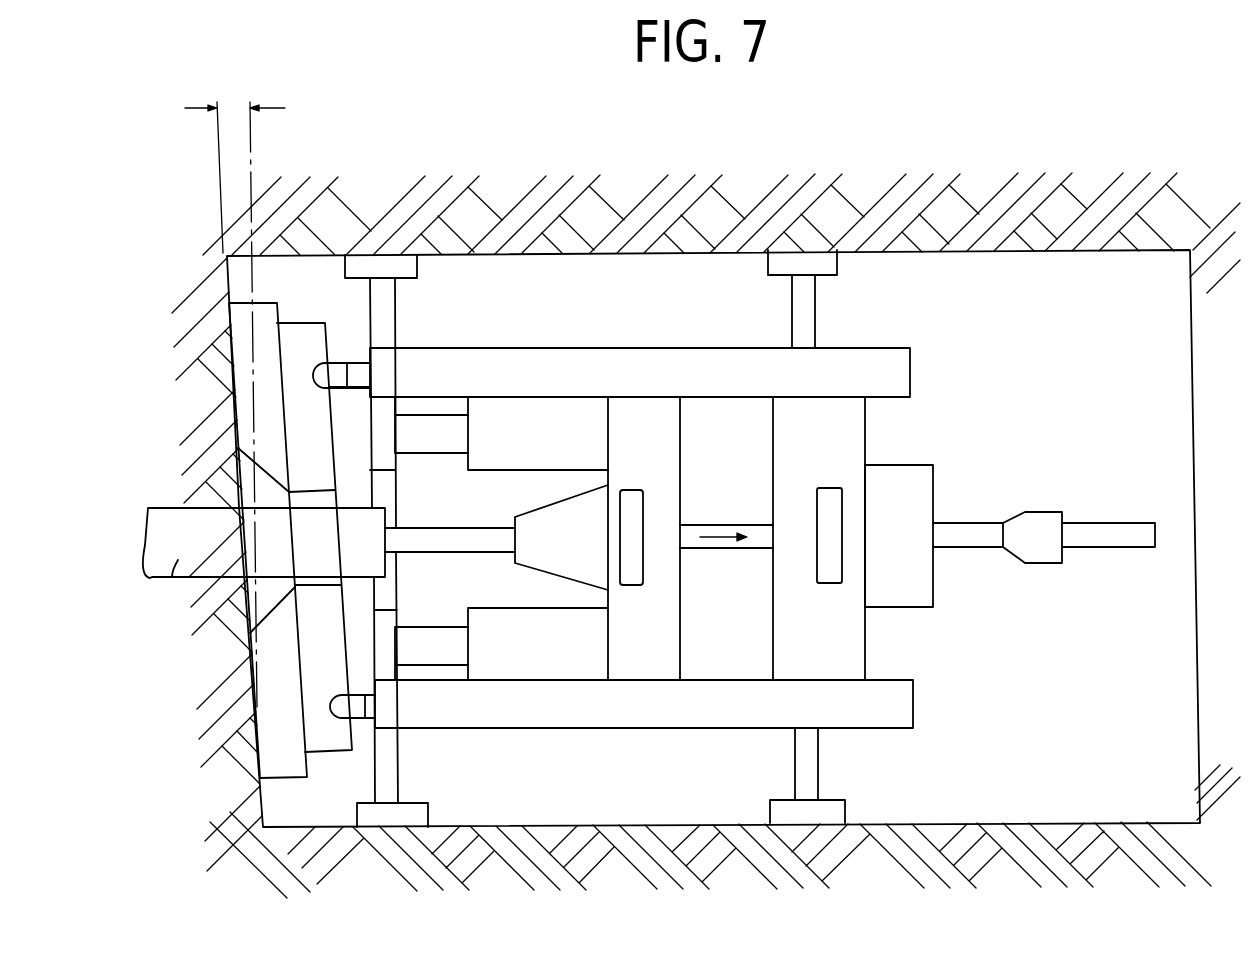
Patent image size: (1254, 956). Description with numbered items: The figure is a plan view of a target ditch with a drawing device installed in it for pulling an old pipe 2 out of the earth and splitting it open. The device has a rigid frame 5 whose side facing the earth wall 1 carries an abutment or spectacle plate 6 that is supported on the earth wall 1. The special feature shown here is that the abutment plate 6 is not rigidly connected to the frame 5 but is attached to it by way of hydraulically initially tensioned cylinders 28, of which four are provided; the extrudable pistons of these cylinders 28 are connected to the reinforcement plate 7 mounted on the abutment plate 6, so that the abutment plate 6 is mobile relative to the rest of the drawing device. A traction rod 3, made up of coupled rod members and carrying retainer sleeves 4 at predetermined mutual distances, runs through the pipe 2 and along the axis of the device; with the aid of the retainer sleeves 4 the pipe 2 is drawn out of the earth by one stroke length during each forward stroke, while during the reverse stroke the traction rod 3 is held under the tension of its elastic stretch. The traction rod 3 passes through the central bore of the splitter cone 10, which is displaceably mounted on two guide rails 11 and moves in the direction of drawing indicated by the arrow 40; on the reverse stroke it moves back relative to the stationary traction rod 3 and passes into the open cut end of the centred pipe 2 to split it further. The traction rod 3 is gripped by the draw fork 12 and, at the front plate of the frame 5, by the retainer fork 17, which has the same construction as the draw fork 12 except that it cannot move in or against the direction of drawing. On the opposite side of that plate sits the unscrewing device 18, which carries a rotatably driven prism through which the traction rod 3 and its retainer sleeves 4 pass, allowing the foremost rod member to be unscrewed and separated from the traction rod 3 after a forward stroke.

The earth wall 1 is at (205, 298).
The pipe 2 is at (172, 578).
The traction rod 3 is at (1117, 533).
The retainer sleeves 4 is at (1043, 527).
The rigid frame 5 is at (703, 370).
The abutment plate 6 is at (270, 727).
The reinforcement plate 7 is at (310, 658).
The splitter cone 10 is at (558, 557).
The guide rails 11 is at (443, 427).
The draw fork 12 is at (637, 572).
The retainer fork 17 is at (832, 513).
The unscrewing device 18 is at (913, 585).
The hydraulically initially tensioned cylinders 28 is at (362, 365).
The arrow indicating direction of drawing 40 is at (717, 537).